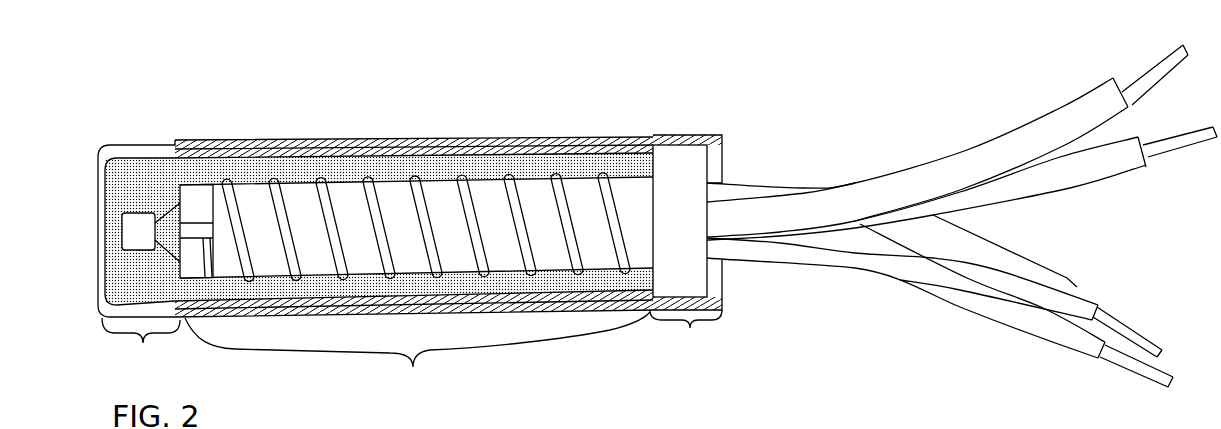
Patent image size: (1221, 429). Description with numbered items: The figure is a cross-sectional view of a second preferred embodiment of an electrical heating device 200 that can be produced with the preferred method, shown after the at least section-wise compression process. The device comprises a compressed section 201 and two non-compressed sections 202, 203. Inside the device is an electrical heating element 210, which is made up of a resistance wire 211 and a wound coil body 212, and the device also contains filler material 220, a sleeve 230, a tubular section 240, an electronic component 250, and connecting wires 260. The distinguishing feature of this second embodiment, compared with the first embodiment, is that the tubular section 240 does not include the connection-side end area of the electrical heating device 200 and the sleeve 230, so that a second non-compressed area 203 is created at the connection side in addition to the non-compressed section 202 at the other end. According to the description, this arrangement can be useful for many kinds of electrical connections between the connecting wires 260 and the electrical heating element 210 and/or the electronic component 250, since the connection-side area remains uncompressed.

The electrical heating device 200 is at (600, 132).
The compressed section 201 is at (417, 357).
The non-compressed section 202 is at (141, 346).
The non-compressed section 203 is at (686, 334).
The electrical heating element 210 is at (360, 160).
The resistance wire 211 is at (517, 172).
The wound coil body 212 is at (445, 193).
The filler material 220 is at (190, 172).
The sleeve 230 is at (630, 135).
The tubular section 240 is at (278, 138).
The electronic component 250 is at (140, 213).
The connecting wires 260 is at (777, 213).